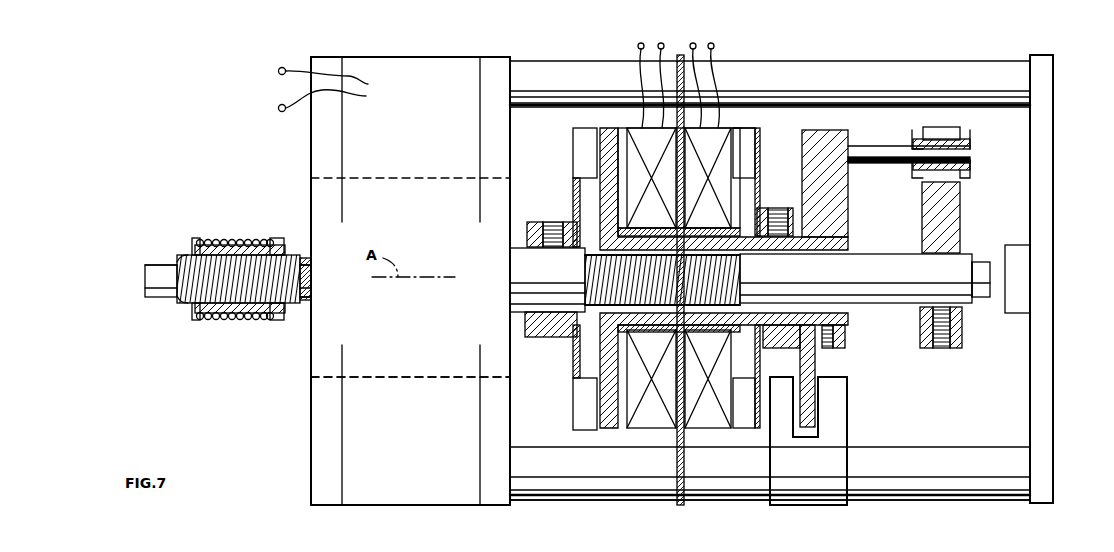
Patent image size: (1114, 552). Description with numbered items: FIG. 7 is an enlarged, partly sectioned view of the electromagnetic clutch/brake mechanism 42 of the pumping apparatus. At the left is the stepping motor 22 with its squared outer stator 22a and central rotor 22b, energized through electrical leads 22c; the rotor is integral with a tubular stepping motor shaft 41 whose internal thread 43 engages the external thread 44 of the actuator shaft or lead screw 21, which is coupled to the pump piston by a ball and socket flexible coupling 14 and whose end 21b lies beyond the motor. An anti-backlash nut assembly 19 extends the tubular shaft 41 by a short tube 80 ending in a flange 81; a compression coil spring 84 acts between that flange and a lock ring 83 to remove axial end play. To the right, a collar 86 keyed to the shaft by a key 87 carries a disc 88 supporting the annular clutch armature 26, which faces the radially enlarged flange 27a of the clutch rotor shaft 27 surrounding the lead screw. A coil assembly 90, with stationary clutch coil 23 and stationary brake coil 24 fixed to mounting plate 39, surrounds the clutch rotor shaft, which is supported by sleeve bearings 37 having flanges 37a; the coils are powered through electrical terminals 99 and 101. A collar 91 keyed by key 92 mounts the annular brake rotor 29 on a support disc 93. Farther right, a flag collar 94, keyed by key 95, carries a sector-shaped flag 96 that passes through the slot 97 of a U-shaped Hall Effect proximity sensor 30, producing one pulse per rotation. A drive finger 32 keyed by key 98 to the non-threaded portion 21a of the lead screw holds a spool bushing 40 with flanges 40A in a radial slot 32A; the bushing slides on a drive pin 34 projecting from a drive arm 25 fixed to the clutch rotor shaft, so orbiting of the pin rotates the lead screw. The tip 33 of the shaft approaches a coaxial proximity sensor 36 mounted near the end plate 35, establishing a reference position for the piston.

The ball and socket flexible coupling 14 is at (770, 526).
The anti-backlash nut assembly 19 is at (258, 224).
The actuator shaft or lead screw 21 is at (178, 300).
The non-threaded end portion 21a is at (948, 270).
The shaft end 21b is at (145, 292).
The stepping motor 22 is at (305, 163).
The stator 22a is at (413, 492).
The rotor 22b is at (440, 378).
The electrical leads 22c is at (272, 100).
The stationary clutch coil 23 is at (637, 145).
The stationary brake coil 24 is at (722, 160).
The drive arm 25 is at (836, 204).
The clutch armature 26 is at (582, 405).
The clutch rotor shaft 27 is at (608, 432).
The radially enlarged flange 27a is at (606, 135).
The brake rotor 29 is at (745, 428).
The proximity sensor 30 is at (808, 441).
The drive finger 32 is at (928, 348).
The radial slot 32A is at (960, 183).
The tip 33 is at (986, 298).
The drive pin 34 is at (884, 150).
The end plate 35 is at (1042, 208).
The proximity sensor 36 is at (1022, 277).
The sleeve bearings 37 is at (650, 236).
The flange 37a is at (630, 334).
The coil mounting plate 39 is at (677, 456).
The spool bushing 40 is at (970, 138).
The flanges 40A is at (918, 128).
The tubular stepping motor shaft 41 is at (305, 292).
The electromagnetic clutch/brake mechanism 42 is at (758, 102).
The thread 43 is at (310, 266).
The thread 44 is at (182, 265).
The short axial length tube 80 is at (196, 318).
The radially enlarged flange 81 is at (197, 238).
The lock ring 83 is at (280, 322).
The compression coil spring 84 is at (232, 320).
The annular collar or hub 86 is at (557, 338).
The key 87 is at (550, 221).
The circular disc or support member 88 is at (575, 192).
The coil assembly 90 is at (735, 122).
The collar or hub 91 is at (772, 340).
The key 92 is at (780, 207).
The brake rotor support member or disc 93 is at (758, 175).
The flag collar or hub 94 is at (846, 334).
The key 95 is at (832, 350).
The flag 96 is at (810, 408).
The slot 97 is at (816, 442).
The key 98 is at (940, 348).
The electrical terminals 99 is at (660, 44).
The coil terminals 101 is at (706, 52).